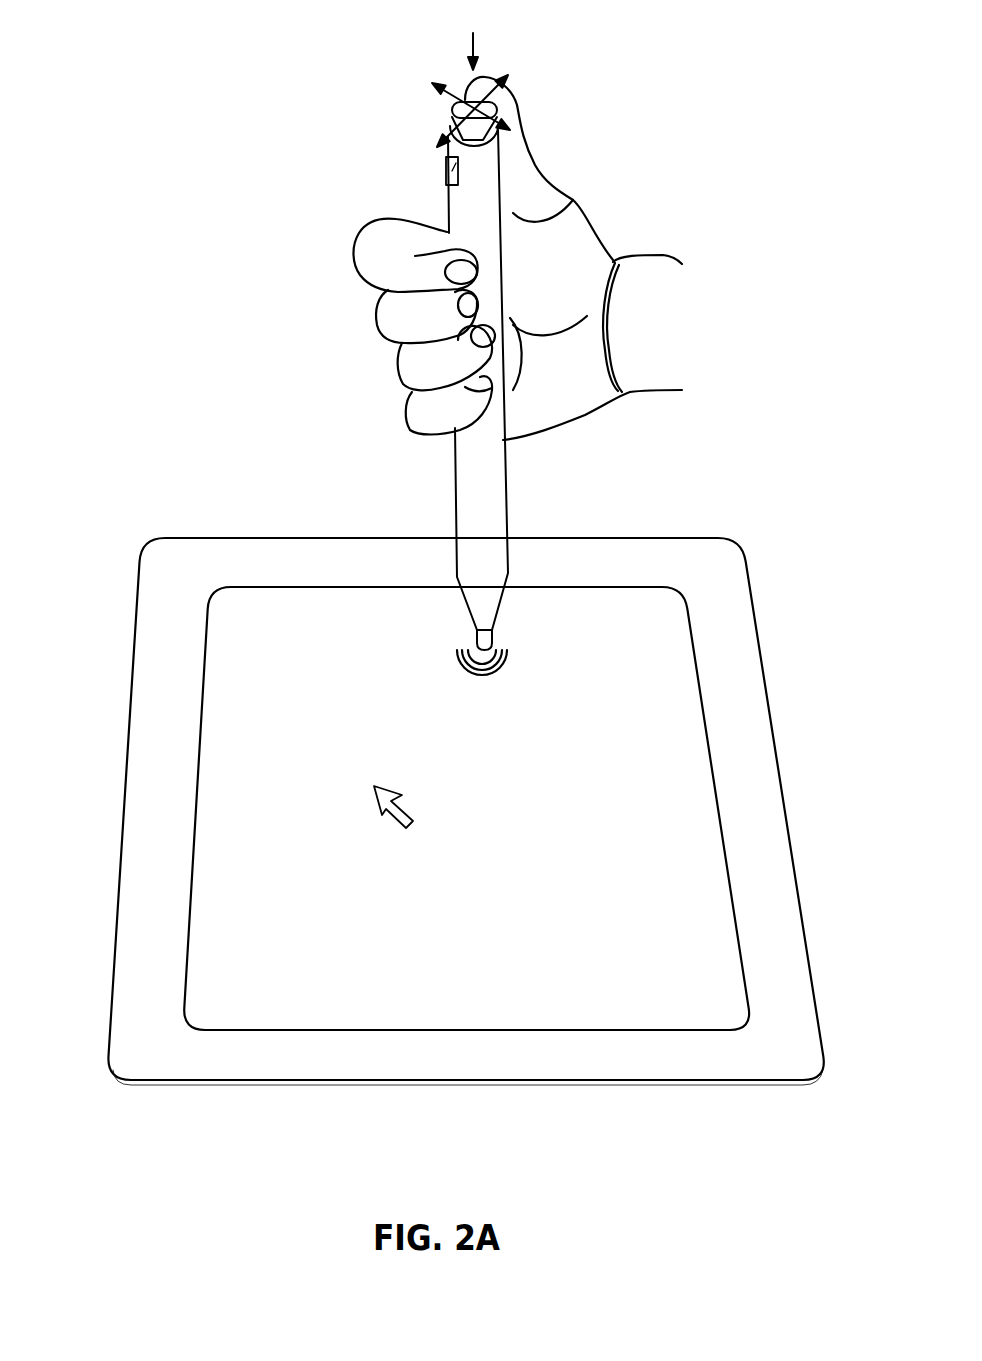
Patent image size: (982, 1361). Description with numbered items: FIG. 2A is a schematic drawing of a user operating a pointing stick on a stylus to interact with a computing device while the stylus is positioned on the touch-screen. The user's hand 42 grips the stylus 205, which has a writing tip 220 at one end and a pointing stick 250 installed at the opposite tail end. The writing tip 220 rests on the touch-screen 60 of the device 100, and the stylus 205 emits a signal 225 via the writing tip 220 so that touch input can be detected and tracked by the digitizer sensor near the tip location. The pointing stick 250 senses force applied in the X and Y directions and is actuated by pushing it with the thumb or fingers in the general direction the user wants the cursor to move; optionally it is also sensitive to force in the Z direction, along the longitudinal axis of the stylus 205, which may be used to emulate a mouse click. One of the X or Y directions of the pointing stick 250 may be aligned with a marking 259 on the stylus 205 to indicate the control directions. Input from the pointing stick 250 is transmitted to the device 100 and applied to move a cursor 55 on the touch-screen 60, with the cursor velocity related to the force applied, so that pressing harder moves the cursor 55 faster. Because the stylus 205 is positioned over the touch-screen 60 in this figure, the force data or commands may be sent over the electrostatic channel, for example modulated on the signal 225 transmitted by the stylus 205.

The hand 42 is at (616, 190).
The cursor 55 is at (393, 823).
The touch-screen 60 is at (202, 692).
The device 100 is at (209, 538).
The stylus 205 is at (409, 326).
The writing tip 220 is at (473, 640).
The signal 225 is at (467, 672).
The pointing stick 250 is at (440, 128).
The marking 259 is at (443, 177).